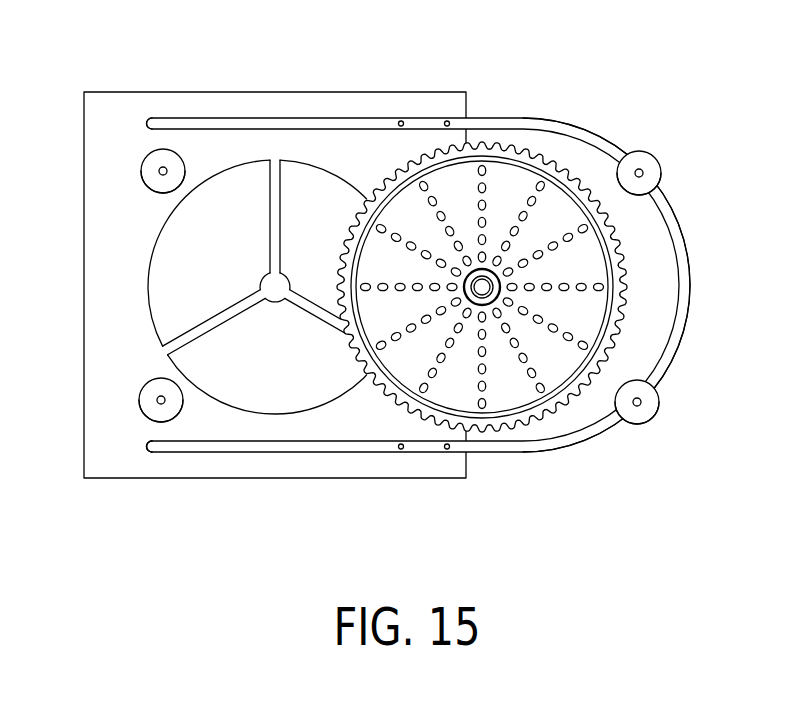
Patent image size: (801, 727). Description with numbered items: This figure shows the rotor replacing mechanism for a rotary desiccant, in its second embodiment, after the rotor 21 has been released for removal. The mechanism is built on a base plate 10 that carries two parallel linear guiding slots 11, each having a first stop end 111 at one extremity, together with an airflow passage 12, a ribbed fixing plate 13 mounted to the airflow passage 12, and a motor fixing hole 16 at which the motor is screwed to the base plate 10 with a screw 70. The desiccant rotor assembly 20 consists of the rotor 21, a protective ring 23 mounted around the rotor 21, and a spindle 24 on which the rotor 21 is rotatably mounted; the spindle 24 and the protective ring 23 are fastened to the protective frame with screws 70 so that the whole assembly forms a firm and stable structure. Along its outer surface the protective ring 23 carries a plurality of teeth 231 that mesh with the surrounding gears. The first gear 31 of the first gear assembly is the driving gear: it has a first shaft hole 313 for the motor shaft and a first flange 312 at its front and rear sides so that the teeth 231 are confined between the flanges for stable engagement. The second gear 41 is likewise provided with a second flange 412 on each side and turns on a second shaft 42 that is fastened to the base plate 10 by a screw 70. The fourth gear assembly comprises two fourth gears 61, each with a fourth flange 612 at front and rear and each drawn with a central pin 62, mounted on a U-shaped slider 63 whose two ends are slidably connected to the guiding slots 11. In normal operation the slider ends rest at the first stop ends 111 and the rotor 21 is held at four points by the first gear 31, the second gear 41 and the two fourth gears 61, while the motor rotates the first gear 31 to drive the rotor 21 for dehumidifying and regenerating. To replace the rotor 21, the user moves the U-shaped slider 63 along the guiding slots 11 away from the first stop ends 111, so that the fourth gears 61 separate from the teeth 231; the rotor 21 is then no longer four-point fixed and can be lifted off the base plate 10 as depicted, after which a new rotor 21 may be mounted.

The base plate 10 is at (120, 108).
The guiding slot 11 is at (268, 125).
The first stop end 111 is at (150, 120).
The airflow passage 12 is at (215, 350).
The ribbed fixing plate 13 is at (273, 288).
The motor fixing hole 16 is at (143, 449).
The desiccant rotor assembly 20 is at (496, 288).
The rotor 21 is at (500, 178).
The protective ring 23 is at (561, 166).
The teeth 231 is at (562, 405).
The spindle 24 is at (483, 290).
The first gear 31 is at (96, 430).
The first flange 312 is at (161, 399).
The first shaft hole 313 is at (148, 406).
The second gear 41 is at (104, 175).
The second shaft 42 is at (163, 171).
The second flange 412 is at (153, 183).
The fourth gear 61 is at (698, 296).
The roller pin 62 is at (640, 173).
The fourth flange 612 is at (652, 185).
The U-shaped slider 63 is at (685, 312).
The screw 70 is at (402, 121).